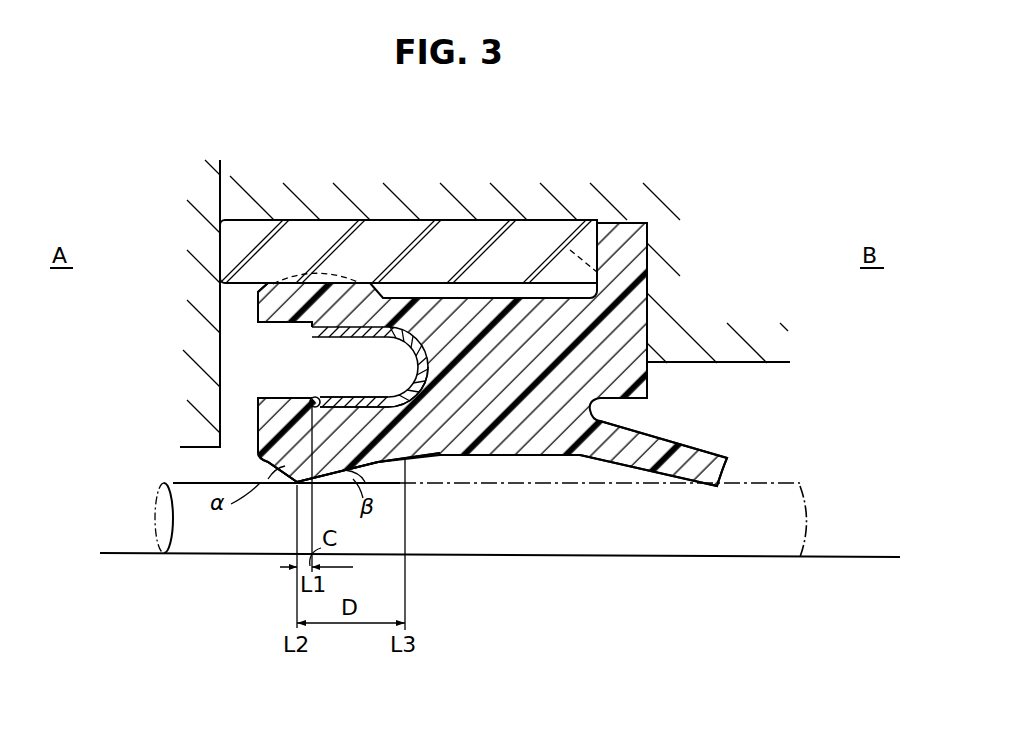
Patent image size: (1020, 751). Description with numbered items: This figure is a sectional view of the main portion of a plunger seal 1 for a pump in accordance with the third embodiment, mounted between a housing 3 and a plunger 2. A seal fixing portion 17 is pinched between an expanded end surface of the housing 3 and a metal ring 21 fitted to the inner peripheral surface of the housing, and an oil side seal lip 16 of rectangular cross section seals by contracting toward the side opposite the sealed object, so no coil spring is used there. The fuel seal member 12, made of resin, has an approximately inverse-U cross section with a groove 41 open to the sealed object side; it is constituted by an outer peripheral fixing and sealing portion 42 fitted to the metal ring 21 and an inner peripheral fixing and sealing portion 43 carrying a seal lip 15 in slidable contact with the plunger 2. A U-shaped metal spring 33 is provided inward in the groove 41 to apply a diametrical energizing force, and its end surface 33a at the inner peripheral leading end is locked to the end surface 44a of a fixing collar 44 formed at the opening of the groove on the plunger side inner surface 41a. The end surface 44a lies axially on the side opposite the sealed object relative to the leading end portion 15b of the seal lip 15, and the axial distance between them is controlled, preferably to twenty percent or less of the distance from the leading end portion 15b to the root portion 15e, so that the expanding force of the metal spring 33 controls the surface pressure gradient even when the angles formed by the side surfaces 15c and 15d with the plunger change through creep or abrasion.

The plunger seal 1 is at (248, 298).
The plunger 2 is at (655, 543).
The housing 3 is at (596, 207).
The fuel seal member 12 is at (248, 438).
The seal lip 15 is at (295, 486).
The leading end portion of seal lip 15b is at (288, 470).
The side surface of seal lip 15c is at (270, 460).
The side surface of seal lip 15d is at (388, 462).
The root portion of seal lip 15e is at (445, 457).
The oil side seal lip 16 is at (728, 459).
The seal fixing portion 17 is at (630, 260).
The metal ring 21 is at (522, 247).
The metal spring 33 is at (423, 343).
The end surface of metal spring 33a is at (310, 403).
The groove 41 is at (282, 347).
The plunger side inner surface 41a is at (425, 420).
The outer peripheral fixing and sealing portion 42 is at (337, 305).
The inner peripheral fixing and sealing portion 43 is at (283, 428).
The fixing collar 44 is at (262, 402).
The end surface of fixing collar 44a is at (320, 397).